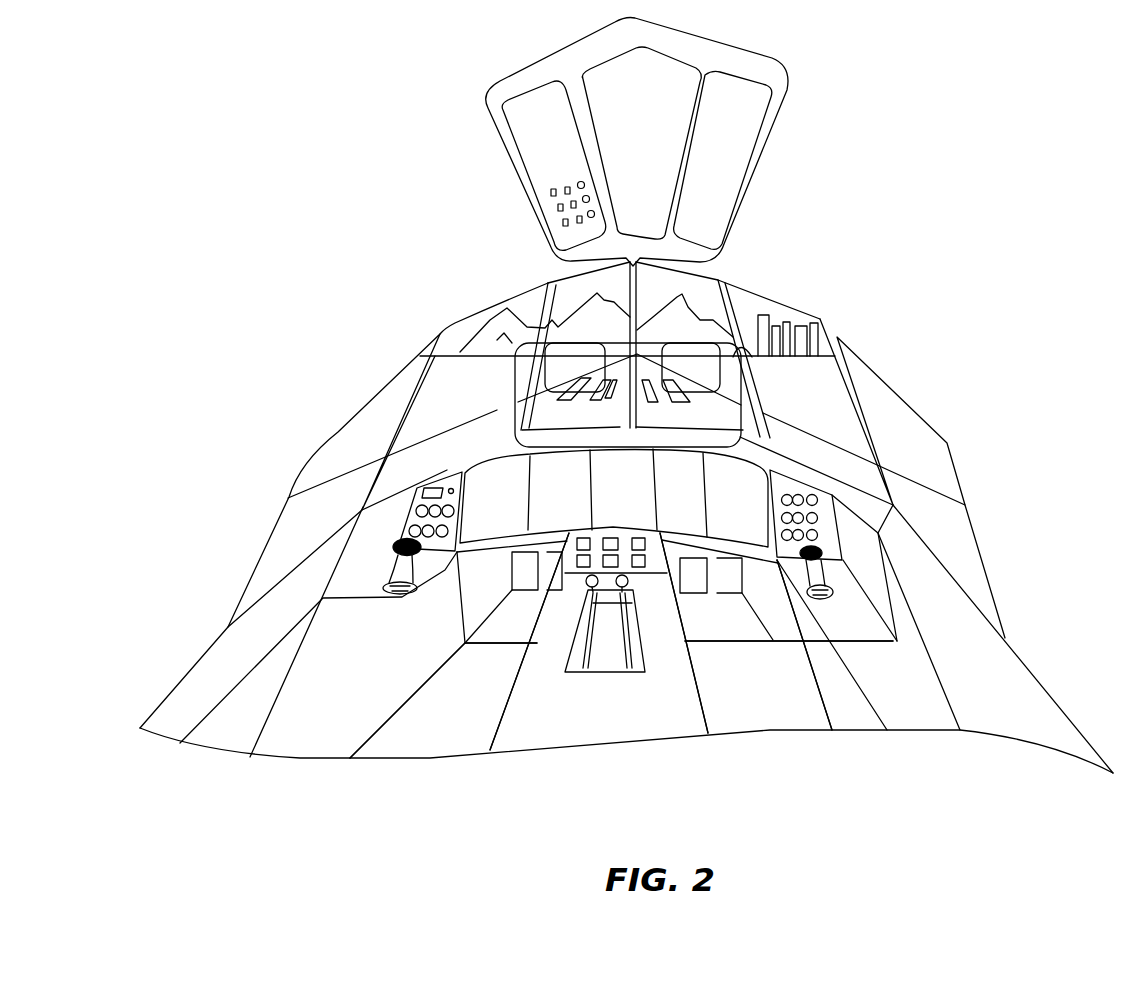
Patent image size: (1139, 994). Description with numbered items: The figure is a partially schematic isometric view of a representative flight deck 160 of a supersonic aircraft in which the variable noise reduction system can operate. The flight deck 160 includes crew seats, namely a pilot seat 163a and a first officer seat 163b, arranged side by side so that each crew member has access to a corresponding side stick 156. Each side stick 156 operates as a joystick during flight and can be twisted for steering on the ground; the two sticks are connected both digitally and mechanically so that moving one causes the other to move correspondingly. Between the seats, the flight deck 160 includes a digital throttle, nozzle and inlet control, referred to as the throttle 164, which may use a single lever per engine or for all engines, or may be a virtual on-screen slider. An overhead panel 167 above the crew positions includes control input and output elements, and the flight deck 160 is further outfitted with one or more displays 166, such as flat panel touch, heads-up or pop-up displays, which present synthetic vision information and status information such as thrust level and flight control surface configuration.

The side stick 156 is at (387, 597).
The flight deck 160 is at (312, 278).
The pilot seat 163a is at (461, 717).
The first officer seat 163b is at (787, 712).
The throttle 164 is at (613, 634).
The displays 166 is at (412, 80).
The overhead panel 167 is at (656, 125).